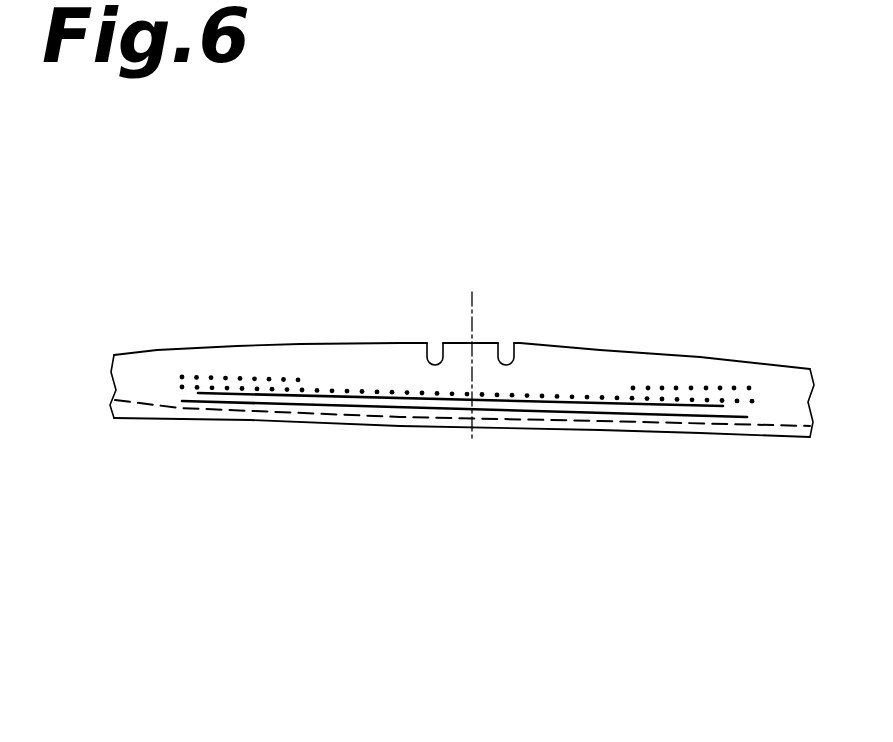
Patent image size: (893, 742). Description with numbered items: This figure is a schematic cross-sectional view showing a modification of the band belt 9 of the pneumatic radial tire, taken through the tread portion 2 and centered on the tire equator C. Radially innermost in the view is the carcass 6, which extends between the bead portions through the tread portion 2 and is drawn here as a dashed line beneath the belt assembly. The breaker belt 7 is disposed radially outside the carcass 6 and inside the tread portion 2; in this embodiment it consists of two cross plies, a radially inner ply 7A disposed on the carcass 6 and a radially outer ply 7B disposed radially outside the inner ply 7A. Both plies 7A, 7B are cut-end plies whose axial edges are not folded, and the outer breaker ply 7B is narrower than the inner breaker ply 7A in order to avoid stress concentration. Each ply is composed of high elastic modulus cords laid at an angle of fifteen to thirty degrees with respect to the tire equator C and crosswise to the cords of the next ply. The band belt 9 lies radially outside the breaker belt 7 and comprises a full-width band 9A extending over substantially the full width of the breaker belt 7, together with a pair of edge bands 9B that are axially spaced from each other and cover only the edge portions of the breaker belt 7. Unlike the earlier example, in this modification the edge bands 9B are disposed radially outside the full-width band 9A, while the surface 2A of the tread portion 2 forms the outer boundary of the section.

The tread portion 2 is at (618, 338).
The top surface of tread 2A is at (157, 350).
The band belt 9 is at (478, 306).
The full-width band 9A is at (592, 397).
The edge bands 9B is at (237, 368).
The breaker belt 7 is at (464, 486).
The inner breaker ply 7A is at (328, 401).
The outer breaker ply 7B is at (392, 399).
The carcass 6 is at (672, 422).
The tire equator C is at (469, 458).